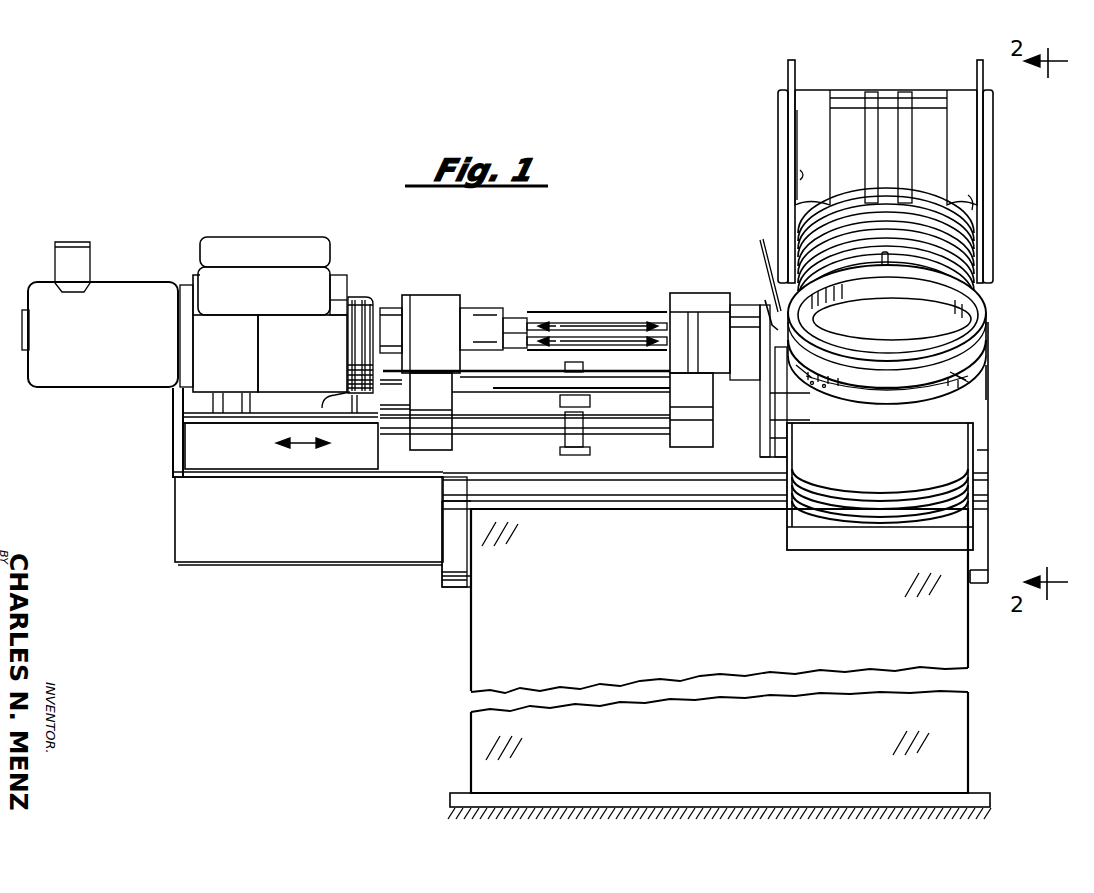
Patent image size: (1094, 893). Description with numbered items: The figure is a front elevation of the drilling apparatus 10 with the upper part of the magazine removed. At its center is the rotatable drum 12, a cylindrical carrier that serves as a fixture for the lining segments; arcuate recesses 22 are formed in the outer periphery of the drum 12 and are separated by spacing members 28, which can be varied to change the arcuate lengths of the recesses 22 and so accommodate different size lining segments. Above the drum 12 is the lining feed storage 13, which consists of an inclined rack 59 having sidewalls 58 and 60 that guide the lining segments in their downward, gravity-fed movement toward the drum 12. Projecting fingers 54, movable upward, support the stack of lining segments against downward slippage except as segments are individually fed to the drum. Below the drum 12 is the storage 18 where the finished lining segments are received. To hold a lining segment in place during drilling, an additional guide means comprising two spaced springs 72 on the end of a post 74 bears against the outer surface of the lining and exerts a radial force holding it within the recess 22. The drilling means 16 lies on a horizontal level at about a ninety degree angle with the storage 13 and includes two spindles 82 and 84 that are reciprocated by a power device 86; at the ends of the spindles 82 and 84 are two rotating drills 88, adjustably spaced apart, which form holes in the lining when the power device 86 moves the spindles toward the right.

The drilling apparatus 10 is at (665, 291).
The rotatable drum 12 is at (975, 305).
The lining feed storage 13 is at (965, 170).
The drilling means 16 is at (770, 322).
The storage 18 is at (955, 458).
The arcuate recesses 22 is at (984, 378).
The spacing members 28 is at (908, 382).
The projecting fingers 54 is at (972, 246).
The sidewall 58 is at (805, 176).
The inclined rack 59 is at (803, 130).
The sidewall 60 is at (975, 198).
The springs 72 is at (790, 392).
The post 74 is at (780, 395).
The spindle 82 is at (578, 324).
The spindle 84 is at (600, 343).
The power device 86 is at (158, 295).
The rotating drills 88 is at (758, 264).